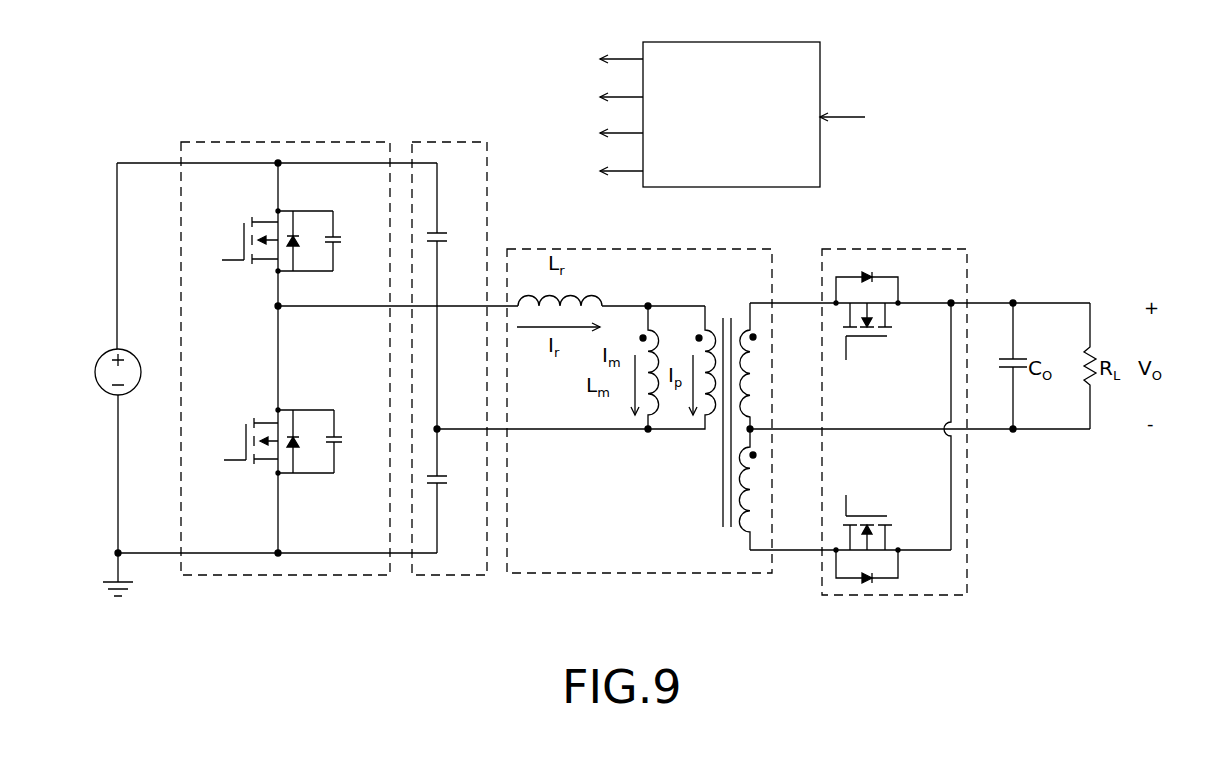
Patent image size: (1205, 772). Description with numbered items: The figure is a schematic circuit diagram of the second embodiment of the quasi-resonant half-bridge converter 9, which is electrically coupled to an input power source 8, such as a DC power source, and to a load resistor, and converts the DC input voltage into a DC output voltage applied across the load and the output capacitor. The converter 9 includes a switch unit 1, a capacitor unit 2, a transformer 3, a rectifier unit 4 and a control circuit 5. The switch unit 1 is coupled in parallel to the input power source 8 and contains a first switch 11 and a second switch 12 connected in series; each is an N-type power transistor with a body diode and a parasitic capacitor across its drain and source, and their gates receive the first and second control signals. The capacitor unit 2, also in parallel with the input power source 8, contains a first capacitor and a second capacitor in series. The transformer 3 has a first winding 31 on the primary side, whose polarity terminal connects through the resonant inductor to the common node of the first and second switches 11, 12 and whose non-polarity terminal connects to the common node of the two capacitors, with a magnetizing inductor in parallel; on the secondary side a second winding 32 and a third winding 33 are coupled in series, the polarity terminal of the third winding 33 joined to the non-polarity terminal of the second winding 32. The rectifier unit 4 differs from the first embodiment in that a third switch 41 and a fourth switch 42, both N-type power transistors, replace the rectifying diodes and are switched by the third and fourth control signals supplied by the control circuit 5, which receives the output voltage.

The switch unit 1 is at (352, 142).
The capacitor unit 2 is at (450, 142).
The transformer 3 is at (734, 249).
The rectifier unit 4 is at (922, 249).
The control circuit 5 is at (807, 42).
The input power source 8 is at (130, 350).
The quasi-resonant half-bridge converter 9 is at (400, 600).
The first switch 11 is at (250, 270).
The second switch 12 is at (250, 472).
The first winding 31 is at (708, 330).
The second winding 32 is at (742, 363).
The third winding 33 is at (742, 483).
The third switch 41 is at (905, 328).
The fourth switch 42 is at (905, 524).